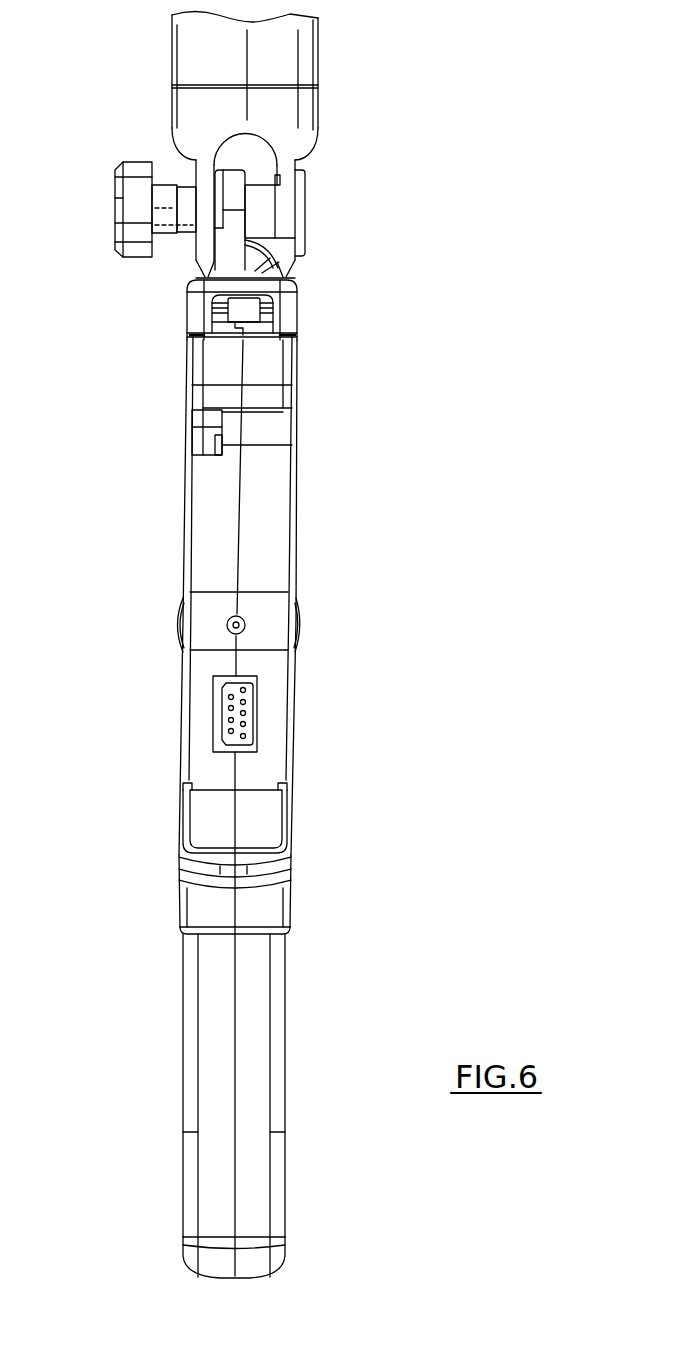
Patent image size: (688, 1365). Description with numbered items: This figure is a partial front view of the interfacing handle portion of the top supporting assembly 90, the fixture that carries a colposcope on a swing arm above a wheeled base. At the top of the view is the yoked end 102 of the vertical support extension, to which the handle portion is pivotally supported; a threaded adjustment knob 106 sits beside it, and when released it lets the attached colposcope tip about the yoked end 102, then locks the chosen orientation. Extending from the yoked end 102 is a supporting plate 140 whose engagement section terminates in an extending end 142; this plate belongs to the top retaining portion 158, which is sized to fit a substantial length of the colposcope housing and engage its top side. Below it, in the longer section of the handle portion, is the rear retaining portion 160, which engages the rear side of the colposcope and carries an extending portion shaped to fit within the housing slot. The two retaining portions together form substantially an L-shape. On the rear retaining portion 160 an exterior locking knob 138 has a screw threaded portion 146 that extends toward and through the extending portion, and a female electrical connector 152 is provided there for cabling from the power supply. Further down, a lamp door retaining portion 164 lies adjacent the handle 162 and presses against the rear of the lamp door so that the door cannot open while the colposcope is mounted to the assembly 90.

The top supporting assembly 90 is at (300, 52).
The yoked end 102 is at (307, 120).
The adjustment knob 106 is at (130, 206).
The exterior locking knob 138 is at (172, 625).
The supporting plate 140 is at (230, 252).
The extending end 142 is at (267, 317).
The screw threaded portion 146 is at (246, 625).
The female electrical connector 152 is at (244, 713).
The top retaining portion 158 is at (188, 303).
The rear retaining portion 160 is at (277, 533).
The handle 162 is at (205, 1118).
The lamp door retaining portion 164 is at (293, 868).